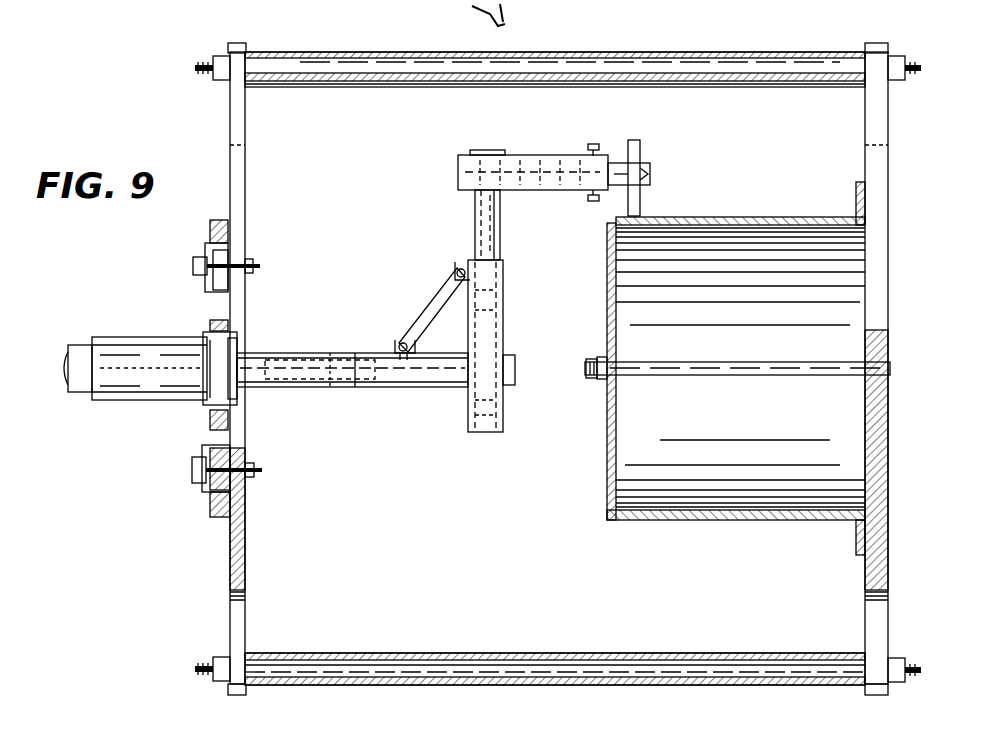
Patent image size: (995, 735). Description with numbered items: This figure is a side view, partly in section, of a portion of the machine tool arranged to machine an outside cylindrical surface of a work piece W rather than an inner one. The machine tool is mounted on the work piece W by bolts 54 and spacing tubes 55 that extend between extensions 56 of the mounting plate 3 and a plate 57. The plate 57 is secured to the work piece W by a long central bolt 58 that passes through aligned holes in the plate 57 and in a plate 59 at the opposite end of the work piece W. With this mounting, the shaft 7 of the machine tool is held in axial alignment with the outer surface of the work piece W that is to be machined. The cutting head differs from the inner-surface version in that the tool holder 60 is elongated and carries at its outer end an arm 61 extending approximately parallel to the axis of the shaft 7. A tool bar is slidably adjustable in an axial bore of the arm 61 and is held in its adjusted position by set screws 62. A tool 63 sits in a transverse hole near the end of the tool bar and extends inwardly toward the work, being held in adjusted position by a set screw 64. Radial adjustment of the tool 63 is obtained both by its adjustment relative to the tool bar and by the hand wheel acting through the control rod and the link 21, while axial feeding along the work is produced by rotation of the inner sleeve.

The mounting plate 3 is at (246, 303).
The shaft 7 is at (298, 353).
The link 21 is at (430, 305).
The bolts 54 is at (204, 72).
The spacing tubes 55 is at (305, 76).
The extensions 56 is at (250, 172).
The plate 57 is at (862, 420).
The long central bolt 58 is at (688, 361).
The plate 59 is at (607, 300).
The tool holder 60 is at (500, 233).
The arm 61 is at (535, 156).
The set screws 62 is at (590, 143).
The tool 63 is at (643, 148).
The set screw 64 is at (650, 176).
The work piece W is at (667, 522).